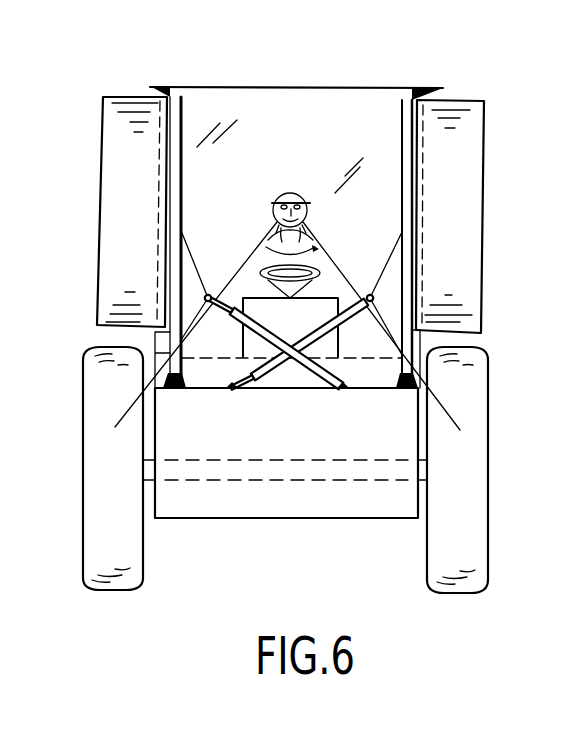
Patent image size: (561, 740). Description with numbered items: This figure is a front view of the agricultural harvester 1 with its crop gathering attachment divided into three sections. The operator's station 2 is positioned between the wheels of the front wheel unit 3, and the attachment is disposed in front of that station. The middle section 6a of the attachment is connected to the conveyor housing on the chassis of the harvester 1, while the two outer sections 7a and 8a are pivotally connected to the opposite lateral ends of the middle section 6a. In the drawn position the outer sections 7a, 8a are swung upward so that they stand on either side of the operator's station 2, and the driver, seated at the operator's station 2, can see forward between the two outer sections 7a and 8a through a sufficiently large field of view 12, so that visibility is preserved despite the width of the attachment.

The agricultural harvester 1 is at (508, 128).
The operator's station 2 is at (283, 98).
The front wheel unit 3 is at (132, 570).
The middle section 6a is at (327, 512).
The outer section 7a is at (110, 127).
The outer section 8a is at (472, 215).
The field of view 12 is at (266, 244).